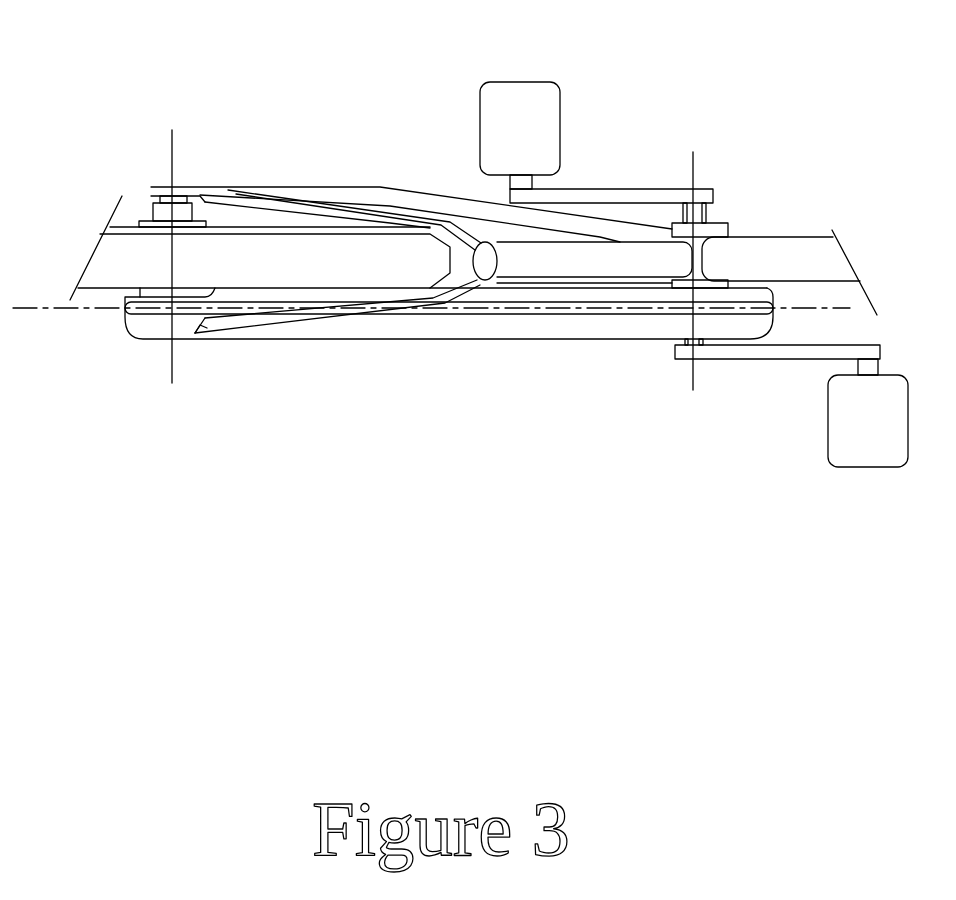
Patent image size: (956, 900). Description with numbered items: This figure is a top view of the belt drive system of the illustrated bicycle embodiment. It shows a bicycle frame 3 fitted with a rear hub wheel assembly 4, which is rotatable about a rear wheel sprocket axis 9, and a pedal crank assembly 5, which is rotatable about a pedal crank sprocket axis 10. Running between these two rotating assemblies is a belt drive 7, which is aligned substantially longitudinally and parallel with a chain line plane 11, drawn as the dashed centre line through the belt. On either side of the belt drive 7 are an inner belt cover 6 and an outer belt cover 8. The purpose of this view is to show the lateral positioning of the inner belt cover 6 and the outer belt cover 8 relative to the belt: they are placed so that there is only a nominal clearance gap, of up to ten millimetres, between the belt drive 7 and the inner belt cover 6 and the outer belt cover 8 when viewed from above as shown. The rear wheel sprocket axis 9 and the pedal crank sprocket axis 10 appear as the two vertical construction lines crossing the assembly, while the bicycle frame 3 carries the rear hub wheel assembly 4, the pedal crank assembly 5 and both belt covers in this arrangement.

The bicycle frame 3 is at (740, 263).
The rear hub wheel assembly 4 is at (248, 265).
The pedal crank assembly 5 is at (870, 438).
The inner belt cover 6 is at (747, 297).
The belt drive 7 is at (773, 313).
The outer belt cover 8 is at (484, 325).
The rear wheel sprocket axis 9 is at (173, 358).
The pedal crank sprocket axis 10 is at (693, 372).
The chain line plane 11 is at (33, 308).